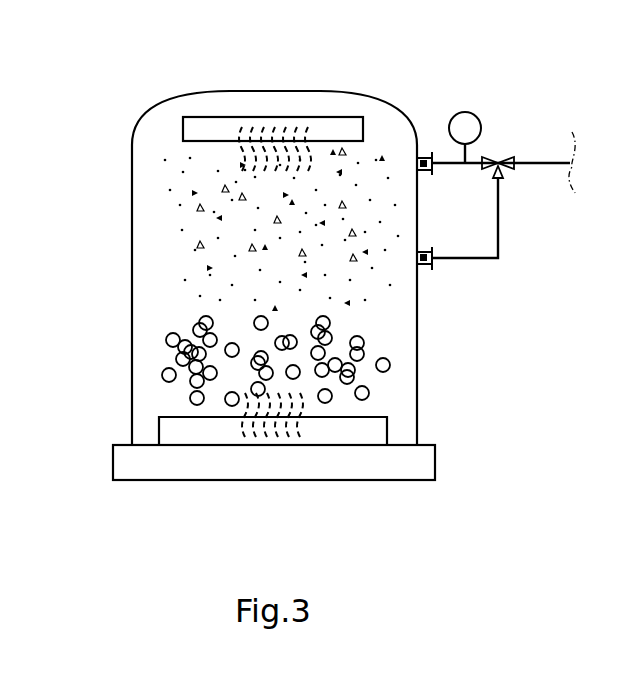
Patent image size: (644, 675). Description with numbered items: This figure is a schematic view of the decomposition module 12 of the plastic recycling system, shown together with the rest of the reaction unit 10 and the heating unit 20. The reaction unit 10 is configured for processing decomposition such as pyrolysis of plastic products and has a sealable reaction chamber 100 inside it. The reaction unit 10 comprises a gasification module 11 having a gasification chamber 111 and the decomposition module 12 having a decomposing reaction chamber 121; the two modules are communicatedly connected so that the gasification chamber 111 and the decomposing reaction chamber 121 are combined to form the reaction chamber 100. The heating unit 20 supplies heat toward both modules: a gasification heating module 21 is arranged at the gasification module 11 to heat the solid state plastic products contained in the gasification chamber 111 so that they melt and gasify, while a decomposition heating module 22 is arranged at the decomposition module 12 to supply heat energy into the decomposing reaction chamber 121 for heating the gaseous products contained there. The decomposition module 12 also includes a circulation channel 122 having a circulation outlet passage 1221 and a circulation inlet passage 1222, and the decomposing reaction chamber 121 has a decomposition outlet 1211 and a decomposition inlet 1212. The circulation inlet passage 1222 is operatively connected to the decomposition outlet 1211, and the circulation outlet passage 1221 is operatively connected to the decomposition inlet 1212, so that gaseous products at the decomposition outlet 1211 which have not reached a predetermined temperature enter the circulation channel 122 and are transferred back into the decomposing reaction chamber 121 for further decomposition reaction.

The reaction unit 10 is at (343, 82).
The heating unit 20 is at (227, 446).
The gasification heating module 21 is at (302, 438).
The decomposition heating module 22 is at (327, 128).
The decomposition module 12 is at (187, 193).
The decomposing reaction chamber 121 is at (190, 213).
The reaction chamber 100 is at (187, 257).
The gasification module 11 is at (187, 305).
The gasification chamber 111 is at (190, 328).
The circulation channel 122 is at (520, 223).
The decomposition outlet 1211 is at (428, 147).
The decomposition inlet 1212 is at (425, 275).
The circulation outlet passage 1221 is at (505, 150).
The circulation inlet passage 1222 is at (500, 272).